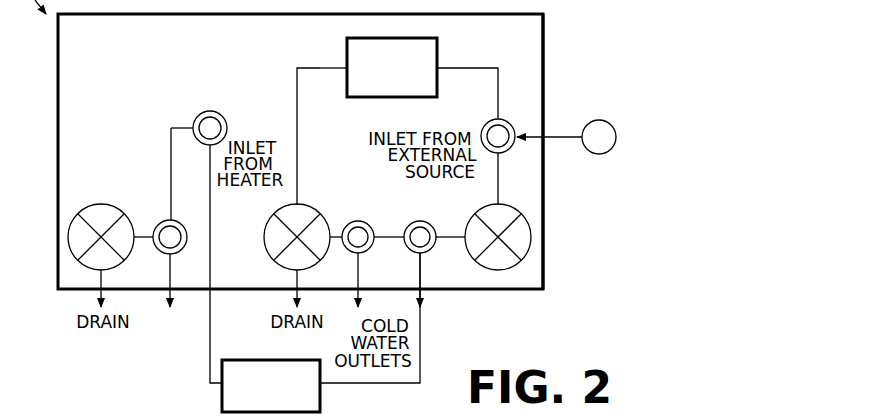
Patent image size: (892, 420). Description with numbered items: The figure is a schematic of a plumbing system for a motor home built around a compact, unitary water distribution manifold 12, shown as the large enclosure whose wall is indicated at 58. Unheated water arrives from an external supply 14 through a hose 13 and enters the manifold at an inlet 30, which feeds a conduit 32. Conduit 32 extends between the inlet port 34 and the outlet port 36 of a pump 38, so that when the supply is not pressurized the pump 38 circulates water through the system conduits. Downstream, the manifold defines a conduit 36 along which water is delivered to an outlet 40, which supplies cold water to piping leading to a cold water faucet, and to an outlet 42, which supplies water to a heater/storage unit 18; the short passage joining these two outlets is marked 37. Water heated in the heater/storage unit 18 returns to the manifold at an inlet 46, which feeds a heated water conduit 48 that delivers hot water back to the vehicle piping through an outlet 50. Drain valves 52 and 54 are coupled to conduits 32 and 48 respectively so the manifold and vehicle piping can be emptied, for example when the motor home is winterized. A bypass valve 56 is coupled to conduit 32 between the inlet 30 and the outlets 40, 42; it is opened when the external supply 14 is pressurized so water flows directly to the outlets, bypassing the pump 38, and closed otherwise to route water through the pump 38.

The water distribution manifold 12 is at (97, 49).
The hose 13 is at (560, 136).
The external supply 14 is at (590, 146).
The heater/storage unit 18 is at (236, 361).
The inlet 30 is at (508, 124).
The conduit 32 is at (497, 82).
The inlet port 34 is at (438, 66).
The outlet port / conduit 36 is at (346, 70).
The cold water conduit 37 is at (388, 241).
The pump 38 is at (346, 55).
The outlet 40 is at (358, 222).
The outlet 42 is at (422, 222).
The inlet 46 is at (216, 122).
The heated water conduit 48 is at (209, 162).
The outlet 50 is at (177, 225).
The drain valve 52 is at (300, 218).
The drain valve 54 is at (92, 213).
The bypass valve 56 is at (507, 213).
The housing wall 58 is at (545, 31).